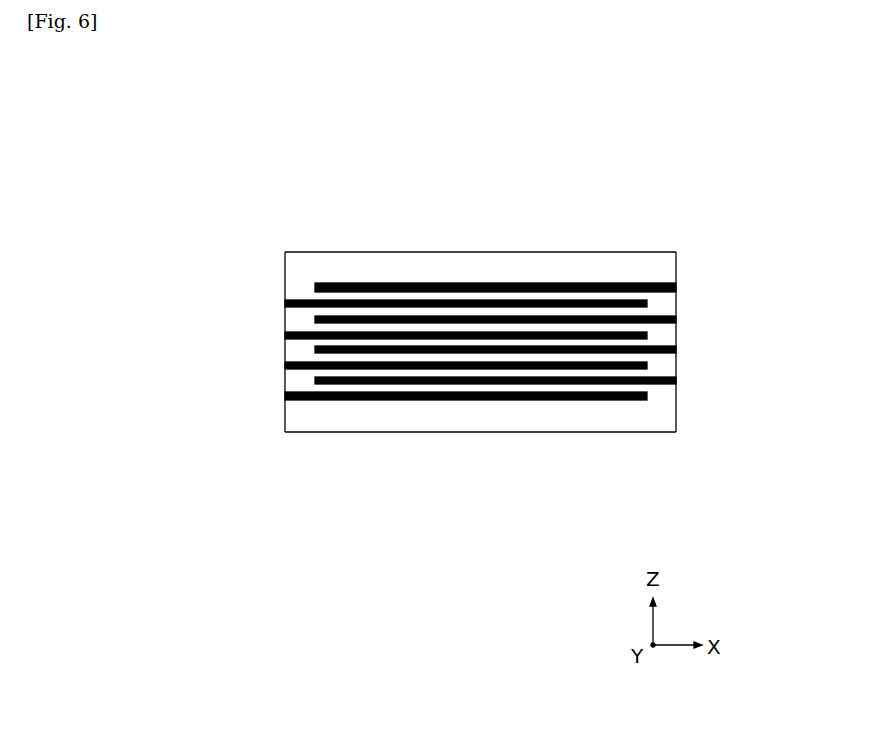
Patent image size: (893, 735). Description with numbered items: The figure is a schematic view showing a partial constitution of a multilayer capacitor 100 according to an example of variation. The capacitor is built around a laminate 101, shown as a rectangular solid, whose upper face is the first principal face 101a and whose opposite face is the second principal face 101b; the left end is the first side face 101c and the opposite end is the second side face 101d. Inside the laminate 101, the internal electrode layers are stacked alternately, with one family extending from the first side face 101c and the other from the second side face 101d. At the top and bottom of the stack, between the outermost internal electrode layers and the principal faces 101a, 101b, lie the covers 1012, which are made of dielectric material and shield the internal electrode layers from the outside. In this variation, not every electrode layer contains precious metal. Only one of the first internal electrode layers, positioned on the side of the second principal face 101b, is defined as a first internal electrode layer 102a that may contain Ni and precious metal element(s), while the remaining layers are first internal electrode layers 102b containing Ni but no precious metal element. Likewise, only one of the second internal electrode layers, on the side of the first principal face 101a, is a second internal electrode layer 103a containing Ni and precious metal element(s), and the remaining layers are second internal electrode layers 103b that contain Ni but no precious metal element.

The multilayer capacitor 100 is at (590, 117).
The laminate 101 is at (484, 345).
The first principal face 101a is at (460, 252).
The second principal face 101b is at (465, 432).
The first side face 101c is at (285, 275).
The second side face 101d is at (676, 420).
The covers 1012 is at (365, 260).
The first internal electrode layers 102a is at (285, 394).
The first internal electrode layers 102b is at (285, 365).
The second internal electrode layers 103a is at (676, 287).
The second internal electrode layers 103b is at (676, 380).